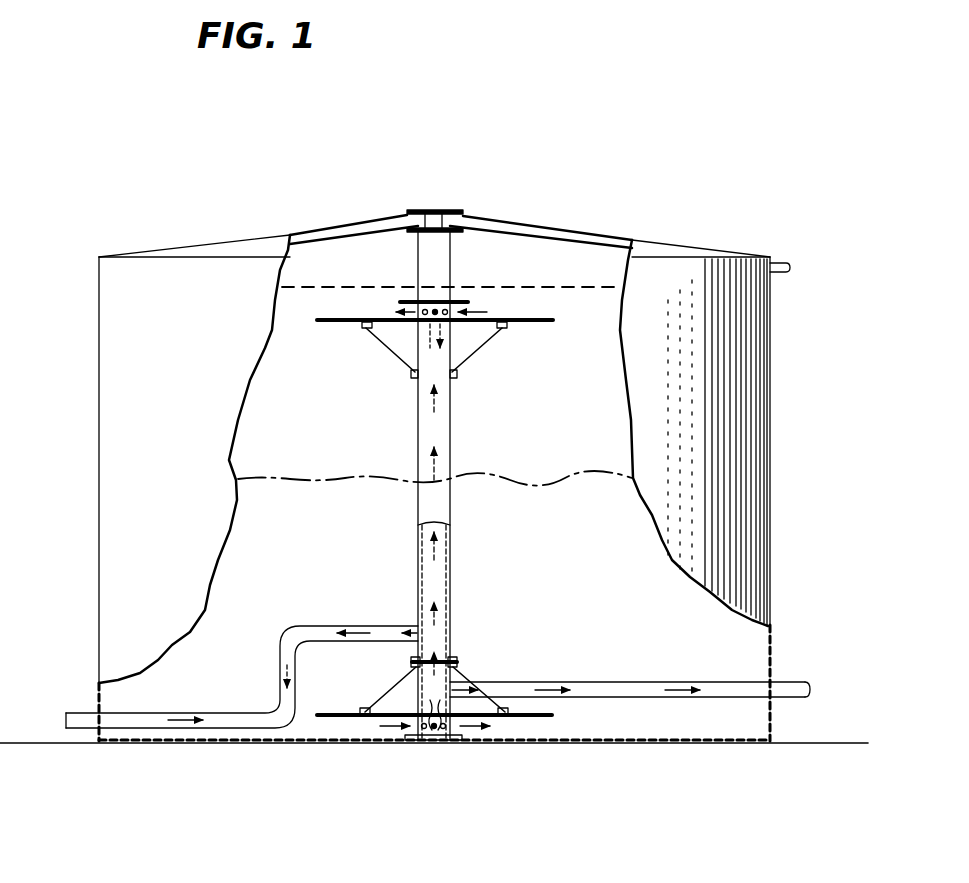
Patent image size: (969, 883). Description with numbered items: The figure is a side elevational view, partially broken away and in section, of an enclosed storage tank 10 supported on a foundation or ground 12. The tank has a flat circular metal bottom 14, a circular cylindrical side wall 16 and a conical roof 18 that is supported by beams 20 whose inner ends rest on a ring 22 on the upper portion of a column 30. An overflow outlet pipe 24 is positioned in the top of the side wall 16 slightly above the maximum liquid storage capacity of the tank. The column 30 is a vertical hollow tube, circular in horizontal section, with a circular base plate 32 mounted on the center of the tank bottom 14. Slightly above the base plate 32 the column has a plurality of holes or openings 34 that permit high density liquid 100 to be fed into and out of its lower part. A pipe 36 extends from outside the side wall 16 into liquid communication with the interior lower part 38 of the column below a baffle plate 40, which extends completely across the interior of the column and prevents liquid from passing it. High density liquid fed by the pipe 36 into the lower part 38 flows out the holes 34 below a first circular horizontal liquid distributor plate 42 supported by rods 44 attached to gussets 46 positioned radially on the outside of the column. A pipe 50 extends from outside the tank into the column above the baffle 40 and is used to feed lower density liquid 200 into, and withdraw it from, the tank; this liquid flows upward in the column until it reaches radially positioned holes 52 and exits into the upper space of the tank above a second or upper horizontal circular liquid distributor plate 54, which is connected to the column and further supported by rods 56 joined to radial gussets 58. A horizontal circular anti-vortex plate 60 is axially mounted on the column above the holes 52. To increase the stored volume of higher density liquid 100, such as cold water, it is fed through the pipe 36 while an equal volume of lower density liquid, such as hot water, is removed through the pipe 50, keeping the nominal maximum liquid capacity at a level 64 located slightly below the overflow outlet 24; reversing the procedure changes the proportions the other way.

The storage tank 10 is at (706, 211).
The foundation or ground 12 is at (803, 746).
The tank bottom 14 is at (593, 745).
The side wall 16 is at (136, 437).
The conical roof 18 is at (501, 219).
The beams 20 is at (314, 240).
The ring 22 is at (412, 233).
The overflow outlet pipe 24 is at (788, 262).
The column 30 is at (466, 454).
The base plate 32 is at (415, 742).
The holes or openings 34 is at (438, 732).
The pipe 36 is at (625, 682).
The interior lower part of column 38 is at (426, 672).
The baffle plate 40 is at (440, 652).
The first liquid distributor plate 42 is at (330, 718).
The rods 44 is at (390, 689).
The gussets 46 is at (460, 662).
The pipe 50 is at (80, 713).
The holes 52 is at (449, 300).
The second liquid distributor plate 54 is at (537, 323).
The rods 56 is at (474, 351).
The radial gussets 58 is at (457, 379).
The anti-vortex plate 60 is at (410, 301).
The level 64 is at (582, 288).
The high density liquid 100 is at (284, 549).
The lower density liquid 200 is at (292, 424).